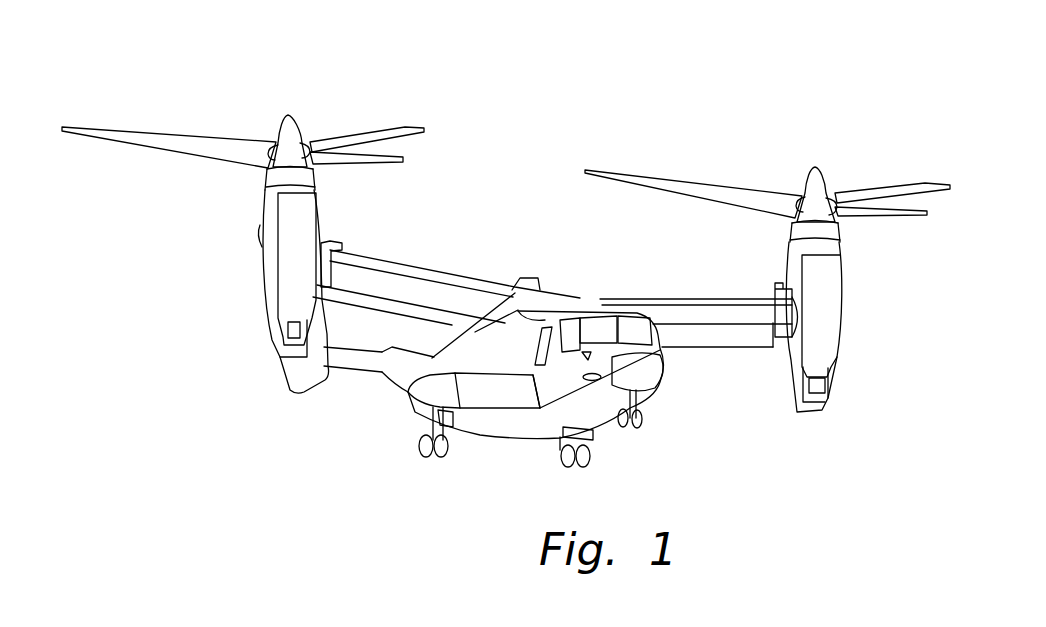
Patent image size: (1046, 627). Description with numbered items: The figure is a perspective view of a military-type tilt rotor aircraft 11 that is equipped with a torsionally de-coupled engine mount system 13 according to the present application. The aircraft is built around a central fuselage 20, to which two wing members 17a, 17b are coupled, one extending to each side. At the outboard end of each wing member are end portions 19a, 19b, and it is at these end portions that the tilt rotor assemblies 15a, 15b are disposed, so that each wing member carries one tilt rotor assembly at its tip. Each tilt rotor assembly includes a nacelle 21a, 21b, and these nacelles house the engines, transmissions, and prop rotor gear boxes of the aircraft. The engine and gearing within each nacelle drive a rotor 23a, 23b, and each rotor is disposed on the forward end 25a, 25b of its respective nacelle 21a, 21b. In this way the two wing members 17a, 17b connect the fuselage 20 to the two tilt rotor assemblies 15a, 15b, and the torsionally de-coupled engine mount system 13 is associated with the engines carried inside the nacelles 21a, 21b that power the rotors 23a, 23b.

The tilt rotor aircraft 11 is at (402, 68).
The torsionally de-coupled engine mount system 13 is at (506, 251).
The tilt rotor assembly 15a is at (242, 232).
The tilt rotor assembly 15b is at (772, 258).
The wing member 17a is at (430, 268).
The wing member 17b is at (694, 298).
The end portion 19a is at (330, 244).
The end portion 19b is at (790, 340).
The fuselage 20 is at (500, 430).
The nacelle 21a is at (271, 278).
The nacelle 21b is at (832, 332).
The rotor 23a is at (284, 132).
The rotor 23b is at (824, 184).
The forward end 25a is at (272, 180).
The forward end 25b is at (834, 236).